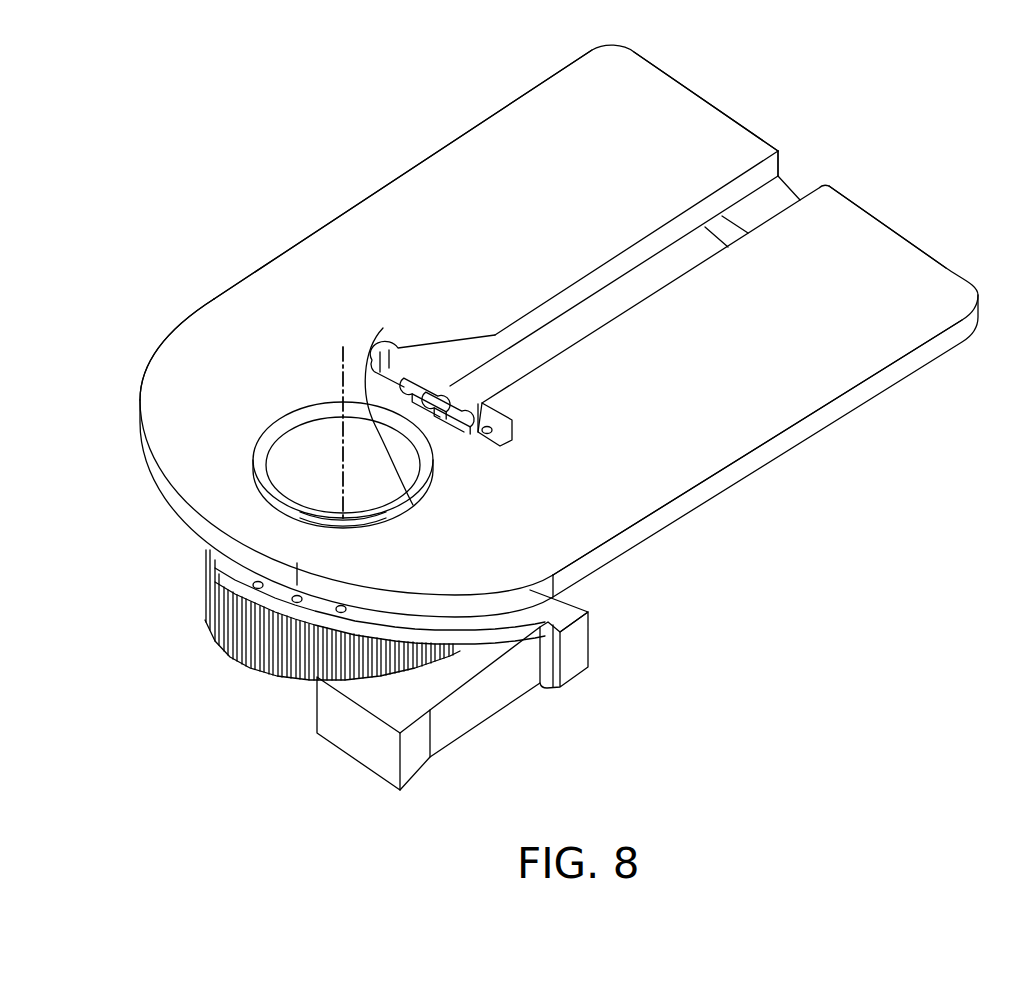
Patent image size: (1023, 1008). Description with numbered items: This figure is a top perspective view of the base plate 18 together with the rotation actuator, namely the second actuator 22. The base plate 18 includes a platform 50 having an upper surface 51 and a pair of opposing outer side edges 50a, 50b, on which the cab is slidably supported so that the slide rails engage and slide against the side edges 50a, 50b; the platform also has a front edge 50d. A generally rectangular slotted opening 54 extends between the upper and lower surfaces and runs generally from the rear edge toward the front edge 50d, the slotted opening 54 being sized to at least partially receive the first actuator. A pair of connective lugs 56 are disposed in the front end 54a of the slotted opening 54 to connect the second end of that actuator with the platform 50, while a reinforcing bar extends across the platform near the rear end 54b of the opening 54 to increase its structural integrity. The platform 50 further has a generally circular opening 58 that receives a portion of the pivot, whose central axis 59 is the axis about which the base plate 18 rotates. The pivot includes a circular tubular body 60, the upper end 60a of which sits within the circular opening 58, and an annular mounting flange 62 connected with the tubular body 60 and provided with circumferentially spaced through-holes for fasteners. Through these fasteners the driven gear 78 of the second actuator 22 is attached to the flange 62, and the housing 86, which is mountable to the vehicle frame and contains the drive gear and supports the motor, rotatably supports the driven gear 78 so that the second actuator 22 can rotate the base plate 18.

The base plate 18 is at (302, 178).
The platform 50 is at (451, 142).
The outer side edge 50a is at (762, 452).
The outer side edge 50b is at (313, 232).
The front edge 50d is at (892, 228).
The upper surface 51 is at (712, 387).
The slotted opening 54 is at (724, 196).
The front end 54a is at (488, 440).
The rear end 54b is at (766, 174).
The connective lugs 56 is at (427, 387).
The circular opening 58 is at (287, 423).
The central axis 59 is at (349, 347).
The tubular body 60 is at (408, 443).
The upper end 60a is at (389, 402).
The mounting flange 62 is at (247, 598).
The driven gear 78 is at (222, 655).
The second actuator 22 is at (244, 694).
The housing 86 is at (352, 760).